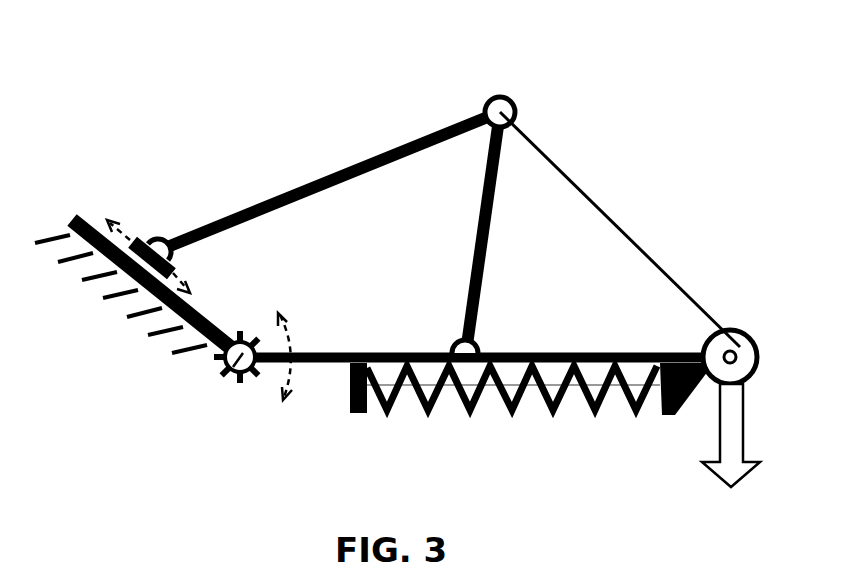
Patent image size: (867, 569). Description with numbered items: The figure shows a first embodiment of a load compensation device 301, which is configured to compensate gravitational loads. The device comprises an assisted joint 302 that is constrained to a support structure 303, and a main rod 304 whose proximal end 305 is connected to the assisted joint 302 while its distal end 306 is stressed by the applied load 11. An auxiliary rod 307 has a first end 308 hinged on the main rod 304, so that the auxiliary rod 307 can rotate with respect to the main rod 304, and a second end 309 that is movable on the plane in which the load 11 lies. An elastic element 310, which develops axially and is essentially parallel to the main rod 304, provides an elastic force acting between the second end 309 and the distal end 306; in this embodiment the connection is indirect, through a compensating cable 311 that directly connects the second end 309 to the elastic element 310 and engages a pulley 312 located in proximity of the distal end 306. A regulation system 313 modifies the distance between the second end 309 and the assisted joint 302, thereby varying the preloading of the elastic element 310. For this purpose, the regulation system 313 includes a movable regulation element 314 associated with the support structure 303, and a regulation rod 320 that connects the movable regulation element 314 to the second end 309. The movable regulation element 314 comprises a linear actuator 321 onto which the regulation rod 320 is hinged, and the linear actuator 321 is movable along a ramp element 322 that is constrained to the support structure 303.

The load compensation device 301 is at (639, 80).
The assisted joint 302 is at (222, 383).
The support structure 303 is at (160, 351).
The main rod 304 is at (603, 350).
The proximal end 305 is at (275, 350).
The distal end 306 is at (710, 387).
The auxiliary rod 307 is at (483, 257).
The first end 308 is at (473, 322).
The second end 309 is at (503, 152).
The elastic element 310 is at (534, 422).
The compensating cable 311 is at (697, 282).
The pulley 312 is at (742, 340).
The regulation system 313 is at (289, 156).
The movable regulation element 314 is at (166, 224).
The regulation rod 320 is at (390, 150).
The linear actuator 321 is at (145, 240).
The ramp element 322 is at (80, 213).
The load 11 is at (745, 440).